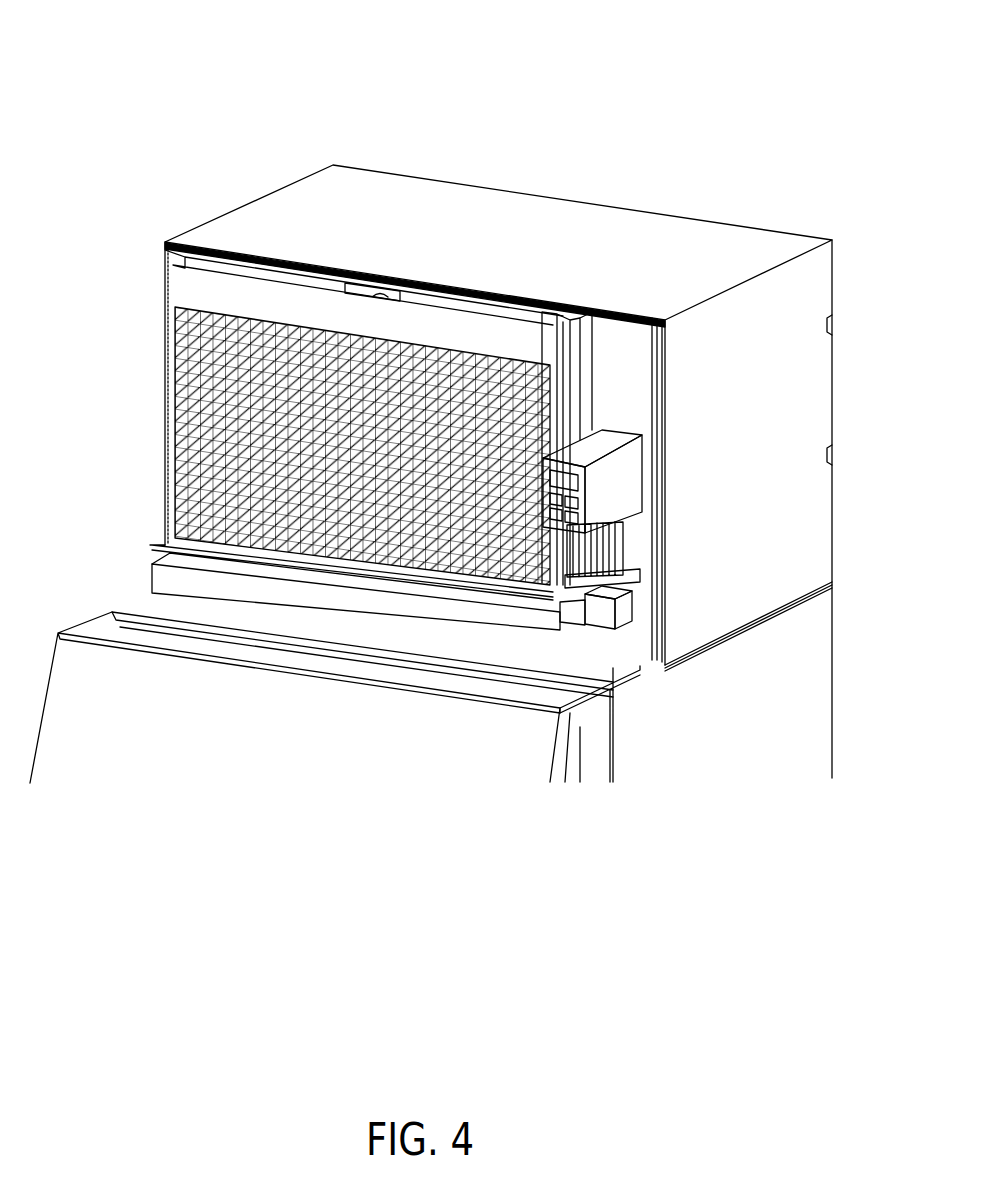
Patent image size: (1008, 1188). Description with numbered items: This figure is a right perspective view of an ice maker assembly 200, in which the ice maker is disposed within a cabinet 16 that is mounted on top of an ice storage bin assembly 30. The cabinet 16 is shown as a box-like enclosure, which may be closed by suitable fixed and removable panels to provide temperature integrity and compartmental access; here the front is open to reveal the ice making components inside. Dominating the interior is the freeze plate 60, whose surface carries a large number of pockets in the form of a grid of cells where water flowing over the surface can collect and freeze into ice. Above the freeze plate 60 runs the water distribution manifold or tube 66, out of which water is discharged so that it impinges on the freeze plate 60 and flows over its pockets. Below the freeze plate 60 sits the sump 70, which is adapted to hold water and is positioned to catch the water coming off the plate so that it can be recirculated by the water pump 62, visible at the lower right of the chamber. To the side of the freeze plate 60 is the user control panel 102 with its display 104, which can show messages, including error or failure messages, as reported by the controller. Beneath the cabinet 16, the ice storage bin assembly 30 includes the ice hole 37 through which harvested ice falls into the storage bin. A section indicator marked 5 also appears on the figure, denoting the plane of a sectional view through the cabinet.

The ice maker assembly 200 is at (655, 95).
The cabinet 16 is at (627, 233).
The water distribution manifold or tube 66 is at (180, 282).
The freeze plate 60 is at (177, 428).
The section line 5- 5 is at (107, 365).
The user control panel 102 is at (595, 498).
The display 104 is at (563, 482).
The water pump 62 is at (607, 610).
The sump 70 is at (163, 576).
The ice hole 37 is at (135, 597).
The ice storage bin assembly 30 is at (807, 672).